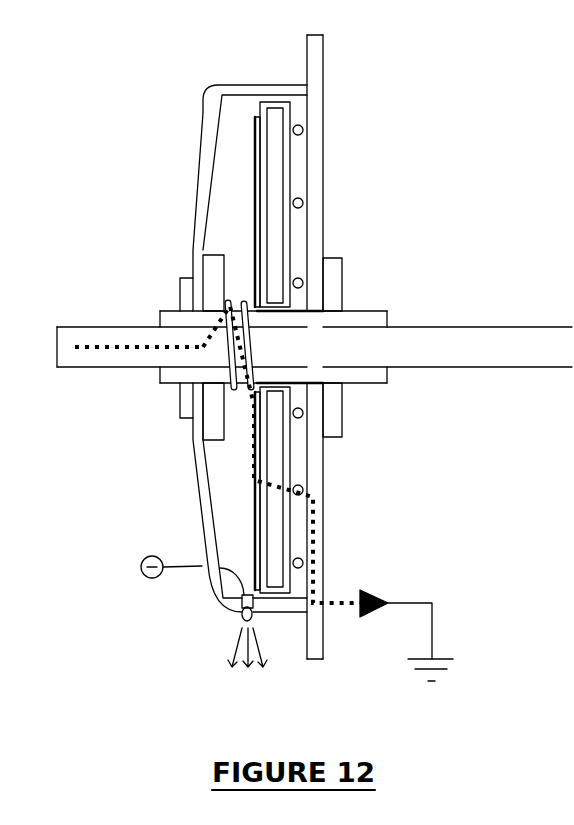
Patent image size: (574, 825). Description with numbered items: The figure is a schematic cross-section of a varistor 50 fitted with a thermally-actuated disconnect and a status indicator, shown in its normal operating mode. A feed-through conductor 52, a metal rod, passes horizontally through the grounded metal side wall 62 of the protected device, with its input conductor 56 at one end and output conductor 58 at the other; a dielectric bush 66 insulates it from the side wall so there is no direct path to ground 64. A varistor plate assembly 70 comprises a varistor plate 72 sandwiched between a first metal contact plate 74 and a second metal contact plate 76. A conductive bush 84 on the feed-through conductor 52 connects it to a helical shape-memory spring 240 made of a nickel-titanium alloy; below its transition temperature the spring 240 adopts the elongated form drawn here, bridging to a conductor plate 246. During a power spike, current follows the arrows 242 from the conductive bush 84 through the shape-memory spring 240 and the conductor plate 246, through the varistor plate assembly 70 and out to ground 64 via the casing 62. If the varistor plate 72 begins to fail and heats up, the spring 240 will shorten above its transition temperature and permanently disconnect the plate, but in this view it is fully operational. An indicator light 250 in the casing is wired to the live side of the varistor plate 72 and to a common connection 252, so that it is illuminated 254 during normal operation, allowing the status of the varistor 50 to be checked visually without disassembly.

The varistor 50 is at (490, 168).
The feed-through conductor 52 is at (98, 335).
The input conductor 56 is at (98, 355).
The output conductor 58 is at (488, 352).
The metal side wall 62 is at (316, 468).
The ground 64 is at (441, 661).
The dielectric bush 66 is at (305, 373).
The varistor plate assembly 70 is at (258, 104).
The varistor plate 72 is at (273, 168).
The first metal contact plate 74 is at (262, 160).
The second metal contact plate 76 is at (292, 233).
The conductive bush 84 is at (183, 297).
The shape-memory spring 240 is at (232, 373).
The current flow path arrows 242 is at (323, 548).
The conductor plate 246 is at (255, 498).
The indicator light 250 is at (242, 617).
The common connection 252 is at (143, 577).
The illumination 254 is at (269, 702).